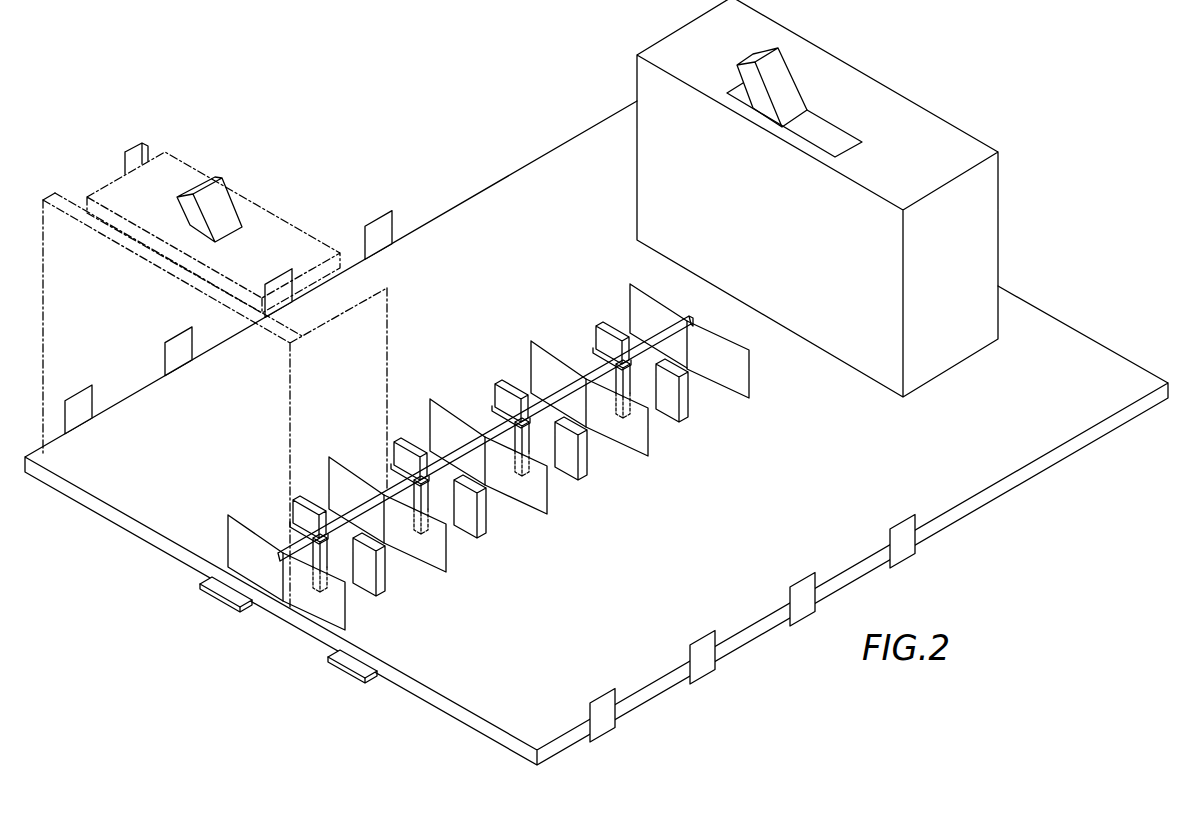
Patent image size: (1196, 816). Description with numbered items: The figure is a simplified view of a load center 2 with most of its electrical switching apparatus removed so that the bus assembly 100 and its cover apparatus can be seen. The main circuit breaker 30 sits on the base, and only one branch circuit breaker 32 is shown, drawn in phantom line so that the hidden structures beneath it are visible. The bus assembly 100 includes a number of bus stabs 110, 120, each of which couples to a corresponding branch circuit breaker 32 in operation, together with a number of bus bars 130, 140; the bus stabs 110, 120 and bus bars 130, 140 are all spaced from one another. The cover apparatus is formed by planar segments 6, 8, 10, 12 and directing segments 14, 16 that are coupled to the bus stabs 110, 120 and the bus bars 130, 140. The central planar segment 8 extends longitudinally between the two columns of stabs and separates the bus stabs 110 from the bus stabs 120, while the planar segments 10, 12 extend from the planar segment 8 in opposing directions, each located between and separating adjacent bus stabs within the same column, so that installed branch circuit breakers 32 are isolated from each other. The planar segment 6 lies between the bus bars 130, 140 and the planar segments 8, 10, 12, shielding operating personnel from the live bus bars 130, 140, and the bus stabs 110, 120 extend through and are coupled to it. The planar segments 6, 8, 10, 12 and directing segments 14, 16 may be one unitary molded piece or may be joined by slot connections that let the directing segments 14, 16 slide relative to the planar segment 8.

The load center 2 is at (908, 52).
The planar segment 6 is at (1088, 352).
The planar segment 8 is at (282, 597).
The planar segment 10 is at (245, 530).
The planar segment 12 is at (325, 608).
The directing segment 14 is at (303, 532).
The directing segment 16 is at (320, 556).
The main circuit breaker 30 is at (950, 140).
The branch circuit breaker 32 is at (180, 157).
The bus assembly 100 is at (583, 93).
The bus stab 110 is at (371, 585).
The bus stab 120 is at (303, 503).
The bus bar 130 is at (223, 602).
The bus bar 140 is at (343, 675).